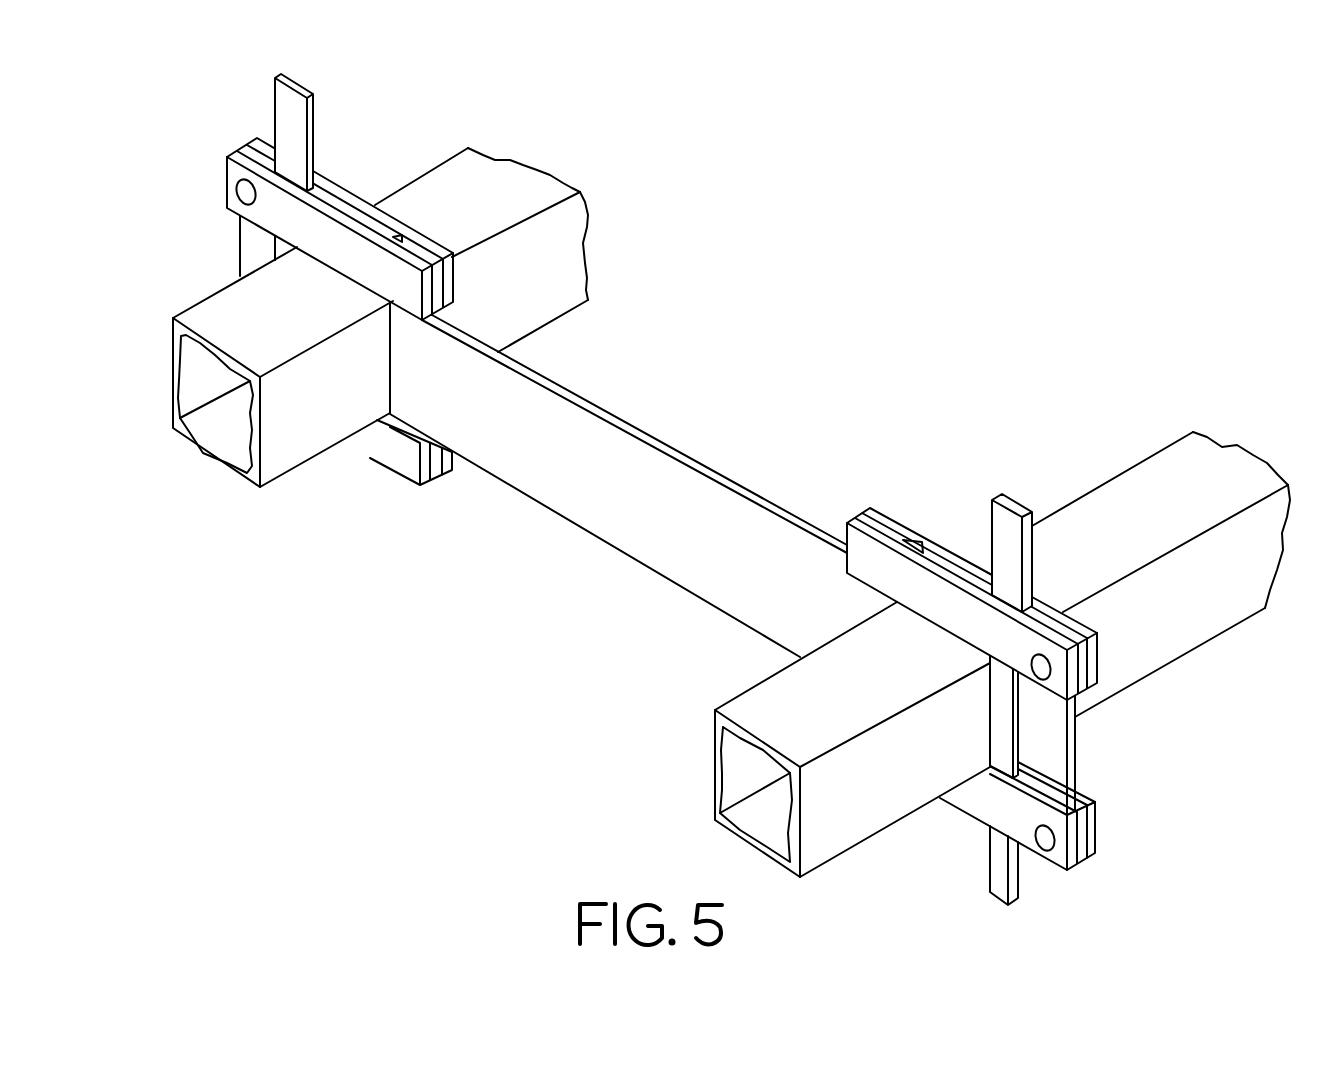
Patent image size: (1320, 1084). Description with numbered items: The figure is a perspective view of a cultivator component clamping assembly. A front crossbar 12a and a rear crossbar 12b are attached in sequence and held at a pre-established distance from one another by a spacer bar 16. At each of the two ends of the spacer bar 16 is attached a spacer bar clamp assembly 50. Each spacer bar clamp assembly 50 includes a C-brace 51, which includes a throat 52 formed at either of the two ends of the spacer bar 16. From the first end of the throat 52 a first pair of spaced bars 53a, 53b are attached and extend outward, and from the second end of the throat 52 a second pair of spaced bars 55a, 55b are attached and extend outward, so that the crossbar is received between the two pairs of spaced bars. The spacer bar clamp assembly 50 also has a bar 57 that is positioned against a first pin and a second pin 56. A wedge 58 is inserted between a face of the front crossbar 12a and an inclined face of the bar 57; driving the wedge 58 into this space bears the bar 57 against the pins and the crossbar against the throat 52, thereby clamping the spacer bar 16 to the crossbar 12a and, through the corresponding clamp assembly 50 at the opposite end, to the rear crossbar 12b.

The front crossbar 12a is at (1220, 447).
The rear crossbar 12b is at (536, 172).
The spacer bar 16 is at (678, 475).
The spacer bar clamp assembly 50 is at (703, 507).
The C-brace 51 is at (968, 515).
The throat 52 is at (407, 416).
The first spaced bar 53a is at (933, 610).
The first spaced bar 53b is at (1099, 657).
The second spaced bar 55a is at (973, 808).
The second spaced bar 55b is at (1095, 828).
The second pin 56 is at (1043, 851).
The bar 57 is at (1072, 747).
The wedge 58 is at (1013, 556).